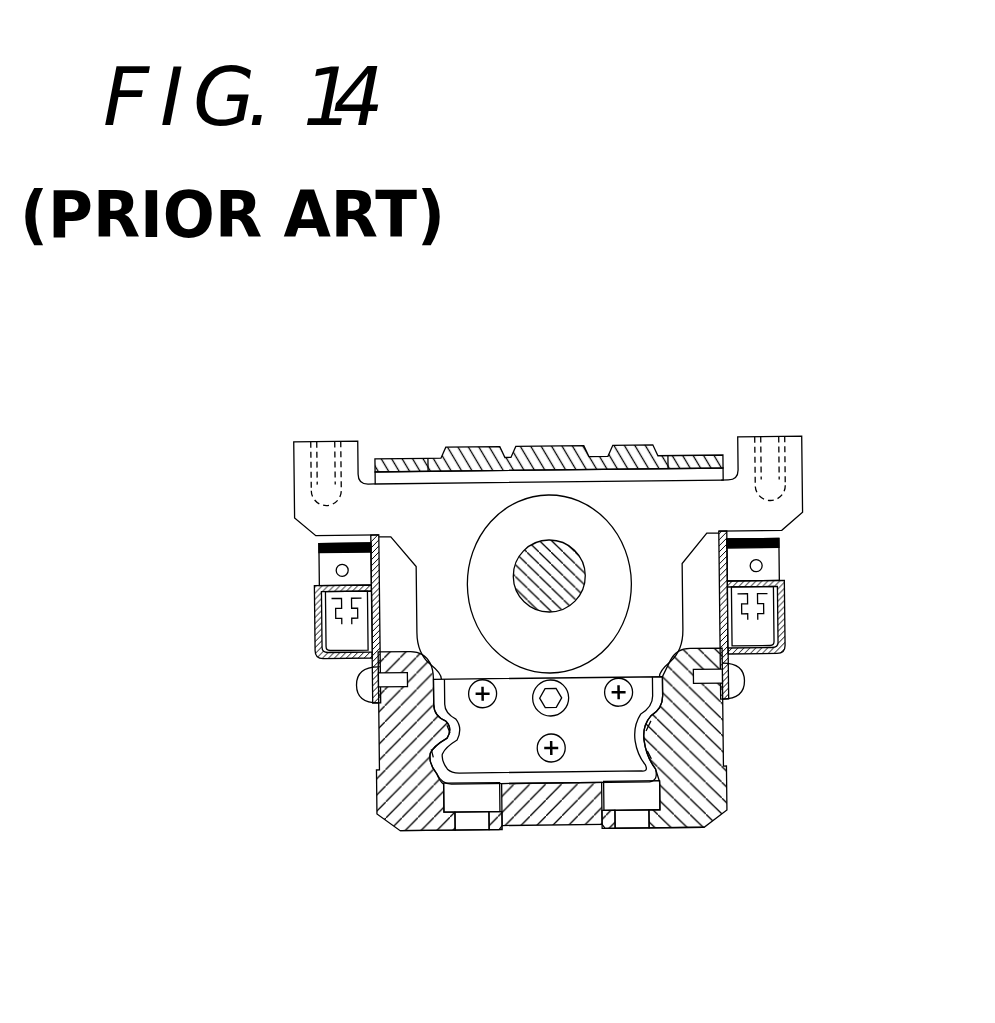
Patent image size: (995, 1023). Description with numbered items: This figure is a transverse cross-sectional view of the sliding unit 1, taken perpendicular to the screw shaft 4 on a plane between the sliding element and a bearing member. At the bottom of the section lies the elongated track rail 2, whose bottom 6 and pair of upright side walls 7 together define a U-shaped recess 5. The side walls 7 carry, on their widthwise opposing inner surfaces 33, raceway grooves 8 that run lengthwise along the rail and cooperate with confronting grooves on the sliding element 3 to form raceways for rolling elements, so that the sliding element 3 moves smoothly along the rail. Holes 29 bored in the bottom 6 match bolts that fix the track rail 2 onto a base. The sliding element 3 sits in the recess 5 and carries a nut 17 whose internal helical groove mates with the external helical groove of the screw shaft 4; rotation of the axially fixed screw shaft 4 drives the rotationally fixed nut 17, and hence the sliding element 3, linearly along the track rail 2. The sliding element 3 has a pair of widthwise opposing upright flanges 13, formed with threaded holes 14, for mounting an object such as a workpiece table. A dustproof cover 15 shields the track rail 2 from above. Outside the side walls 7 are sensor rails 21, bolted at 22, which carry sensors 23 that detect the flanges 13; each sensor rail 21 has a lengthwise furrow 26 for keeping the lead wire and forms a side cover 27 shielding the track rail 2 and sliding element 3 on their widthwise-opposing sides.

The sliding unit 1 is at (633, 417).
The track rail 2 is at (718, 834).
The sliding element 3 is at (650, 523).
The screw shaft 4 is at (532, 567).
The U-shaped recess 5 is at (580, 768).
The bottom 6 is at (535, 813).
The side walls 7 is at (380, 735).
The raceway grooves 8 is at (375, 778).
The upright flanges 13 is at (303, 473).
The threaded holes 14 is at (322, 437).
The dustproof cover 15 is at (570, 457).
The nut 17 is at (468, 510).
The sensor rails 21 is at (345, 660).
The bolt 22 is at (358, 688).
The sensors 23 is at (330, 562).
The furrow 26 is at (337, 630).
The side covers 27 is at (383, 668).
The holes 29 is at (472, 807).
The inner surfaces 33 is at (660, 822).